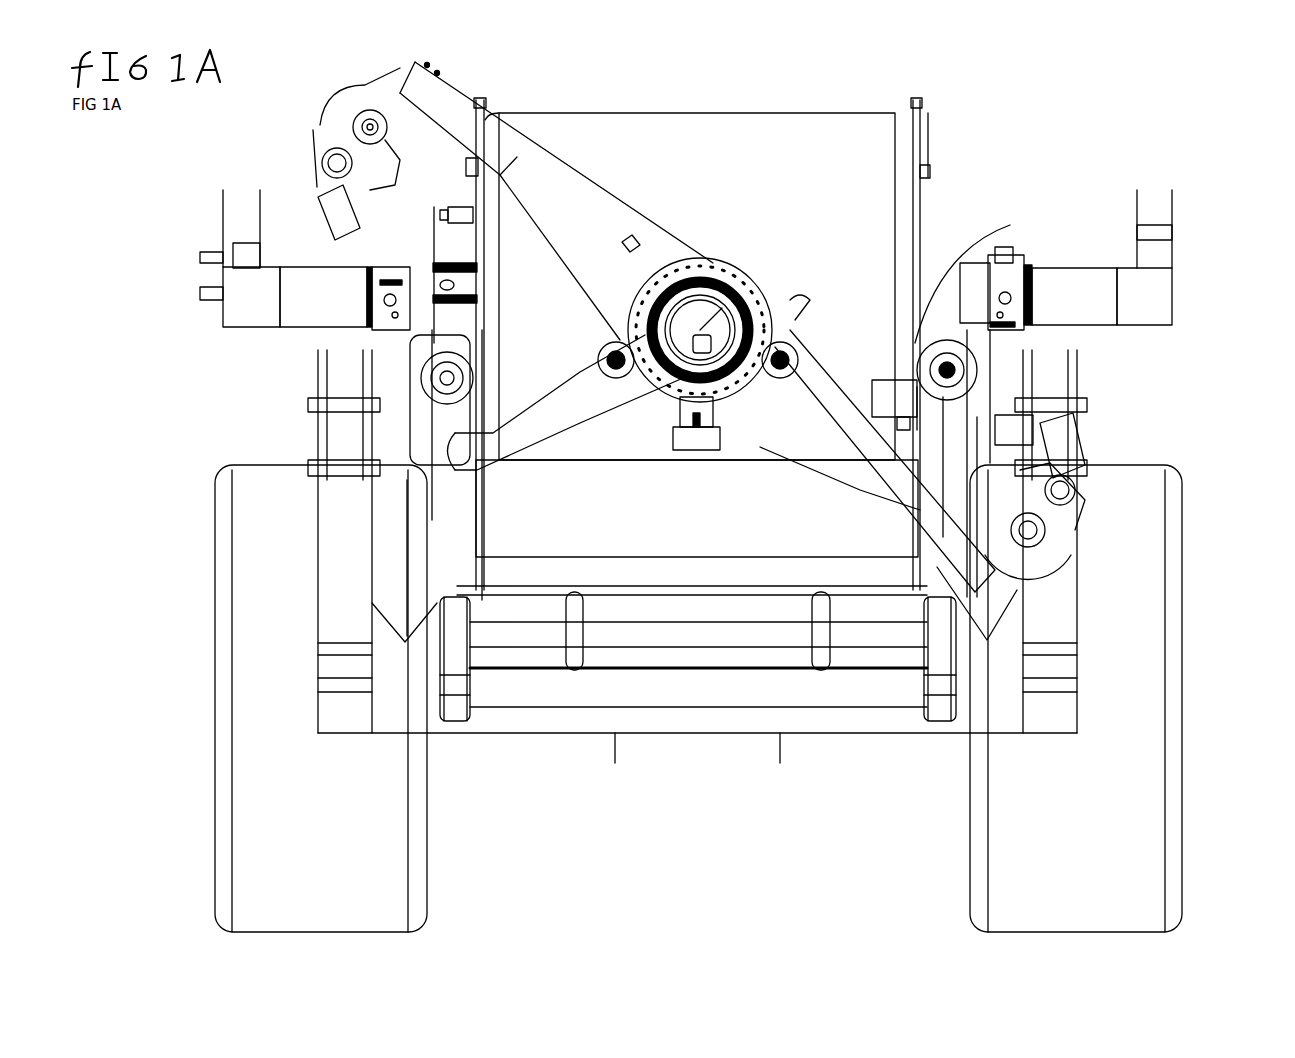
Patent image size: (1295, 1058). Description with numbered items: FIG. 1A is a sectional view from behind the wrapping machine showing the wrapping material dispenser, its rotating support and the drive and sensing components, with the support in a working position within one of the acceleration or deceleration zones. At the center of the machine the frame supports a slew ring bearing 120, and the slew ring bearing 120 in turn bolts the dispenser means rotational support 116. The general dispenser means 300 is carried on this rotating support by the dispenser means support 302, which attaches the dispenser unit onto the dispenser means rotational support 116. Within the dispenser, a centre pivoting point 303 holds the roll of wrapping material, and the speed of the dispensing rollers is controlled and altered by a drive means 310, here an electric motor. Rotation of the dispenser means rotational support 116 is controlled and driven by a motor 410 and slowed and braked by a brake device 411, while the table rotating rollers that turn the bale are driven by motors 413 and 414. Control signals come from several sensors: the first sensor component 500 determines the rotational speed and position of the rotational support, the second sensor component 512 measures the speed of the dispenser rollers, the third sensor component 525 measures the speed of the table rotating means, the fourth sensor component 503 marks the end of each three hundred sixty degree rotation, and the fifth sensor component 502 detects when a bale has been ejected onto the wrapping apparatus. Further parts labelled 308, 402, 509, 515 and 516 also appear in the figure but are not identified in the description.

The dispenser means rotational support 116 is at (565, 203).
The slew ring bearing 120 is at (723, 263).
The dispenser means 300 is at (277, 113).
The dispenser means support 302 is at (358, 92).
The centre pivoting point 303 is at (330, 108).
The roller 308 is at (1077, 522).
The drive means 310 is at (307, 185).
The hub 402 is at (745, 275).
The motor 410 is at (760, 333).
The brake device 411 is at (613, 347).
The motor 413 is at (987, 274).
The motor 414 is at (1047, 402).
The first sensor component 500 is at (780, 297).
The fifth sensor component 502 is at (700, 412).
The fourth sensor component 503 is at (636, 236).
The brace 509 is at (975, 455).
The second sensor component 512 is at (373, 200).
The support arm 515 is at (740, 395).
The pivot pin 516 is at (1077, 483).
The third sensor component 525 is at (930, 437).